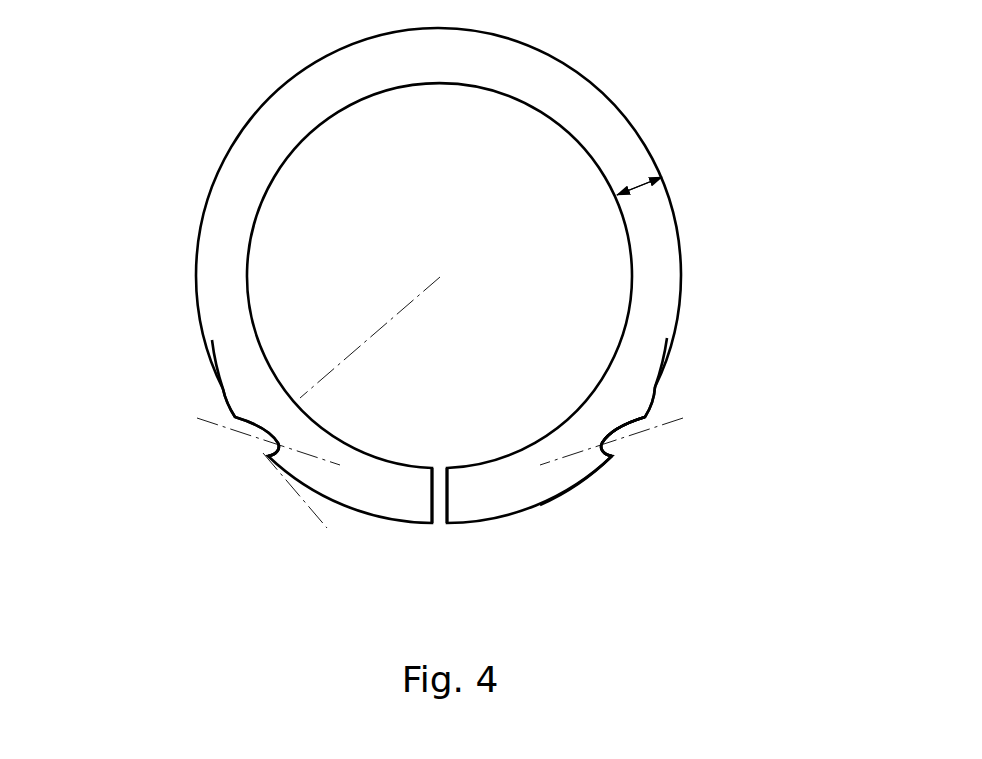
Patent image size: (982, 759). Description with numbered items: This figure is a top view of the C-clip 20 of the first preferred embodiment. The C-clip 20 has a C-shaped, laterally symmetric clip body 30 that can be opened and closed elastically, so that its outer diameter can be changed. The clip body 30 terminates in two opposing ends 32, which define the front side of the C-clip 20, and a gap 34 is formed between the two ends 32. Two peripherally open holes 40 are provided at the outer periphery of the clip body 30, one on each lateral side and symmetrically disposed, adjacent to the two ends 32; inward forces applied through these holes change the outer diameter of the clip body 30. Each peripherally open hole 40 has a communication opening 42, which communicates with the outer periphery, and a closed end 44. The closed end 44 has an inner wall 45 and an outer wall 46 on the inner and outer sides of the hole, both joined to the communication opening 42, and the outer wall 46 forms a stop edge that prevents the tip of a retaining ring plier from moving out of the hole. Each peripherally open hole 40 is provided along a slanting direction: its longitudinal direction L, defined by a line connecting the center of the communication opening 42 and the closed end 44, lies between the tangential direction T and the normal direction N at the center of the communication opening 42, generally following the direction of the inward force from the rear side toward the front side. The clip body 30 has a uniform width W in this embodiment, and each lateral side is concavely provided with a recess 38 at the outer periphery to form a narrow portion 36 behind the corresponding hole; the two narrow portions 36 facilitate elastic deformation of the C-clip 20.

The C-clip 20 is at (463, 266).
The clip body 30 is at (257, 130).
The ends 32 is at (432, 498).
The gap 34 is at (440, 520).
The narrow portions 36 is at (247, 380).
The recess 38 is at (223, 390).
The peripherally open holes 40 is at (245, 442).
The communication opening 42 is at (260, 447).
The closed end 44 is at (600, 437).
The inner wall 45 is at (617, 423).
The outer wall 46 is at (607, 457).
The width W is at (638, 174).
The normal direction N is at (372, 337).
The longitudinal direction L is at (208, 423).
The tangential direction T is at (295, 495).